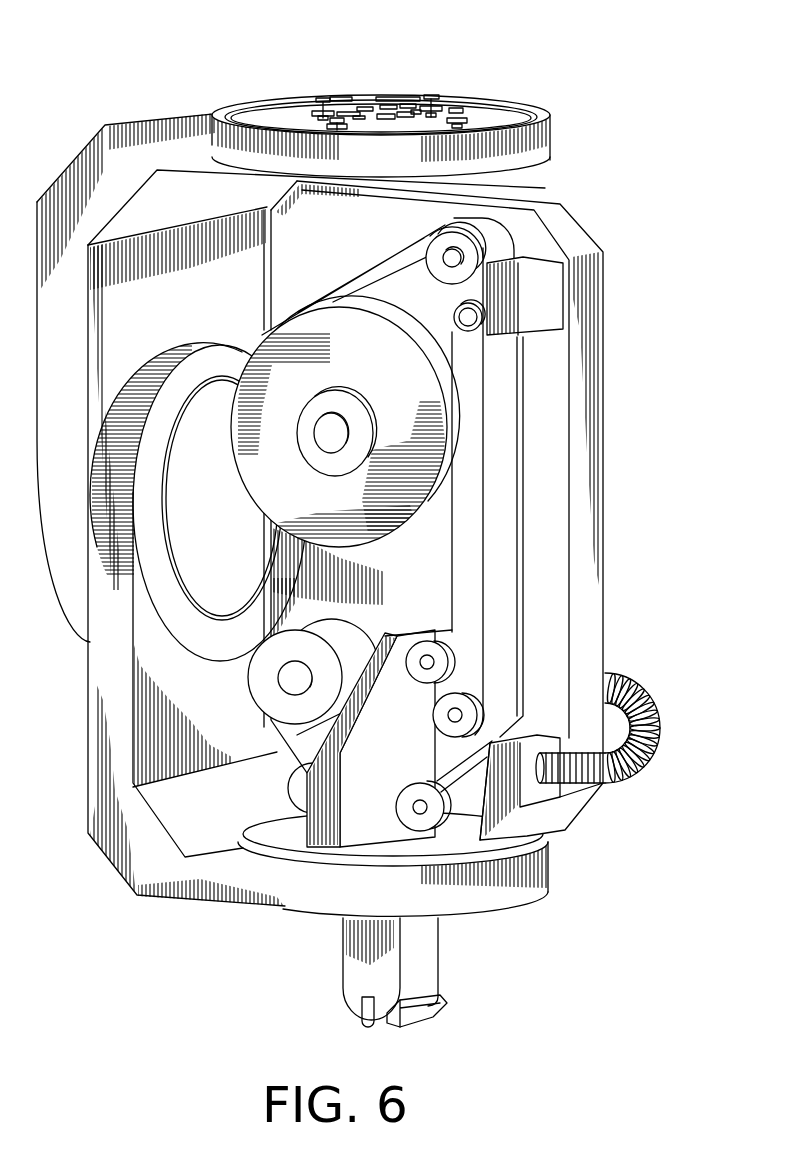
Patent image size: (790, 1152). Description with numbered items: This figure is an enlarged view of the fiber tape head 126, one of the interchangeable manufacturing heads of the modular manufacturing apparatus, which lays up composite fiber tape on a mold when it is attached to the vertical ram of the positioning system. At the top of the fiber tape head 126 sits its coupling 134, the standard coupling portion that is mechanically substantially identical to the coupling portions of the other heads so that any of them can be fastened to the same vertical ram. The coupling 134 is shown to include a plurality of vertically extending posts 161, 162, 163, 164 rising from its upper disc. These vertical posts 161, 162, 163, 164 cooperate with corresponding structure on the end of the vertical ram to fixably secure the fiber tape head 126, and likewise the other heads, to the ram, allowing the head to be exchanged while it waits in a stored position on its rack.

The fiber tape head 126 is at (569, 936).
The coupling portion 134 is at (401, 92).
The vertically extending post 161 is at (334, 90).
The vertically extending post 162 is at (422, 92).
The vertically extending post 163 is at (489, 111).
The vertically extending post 164 is at (309, 121).